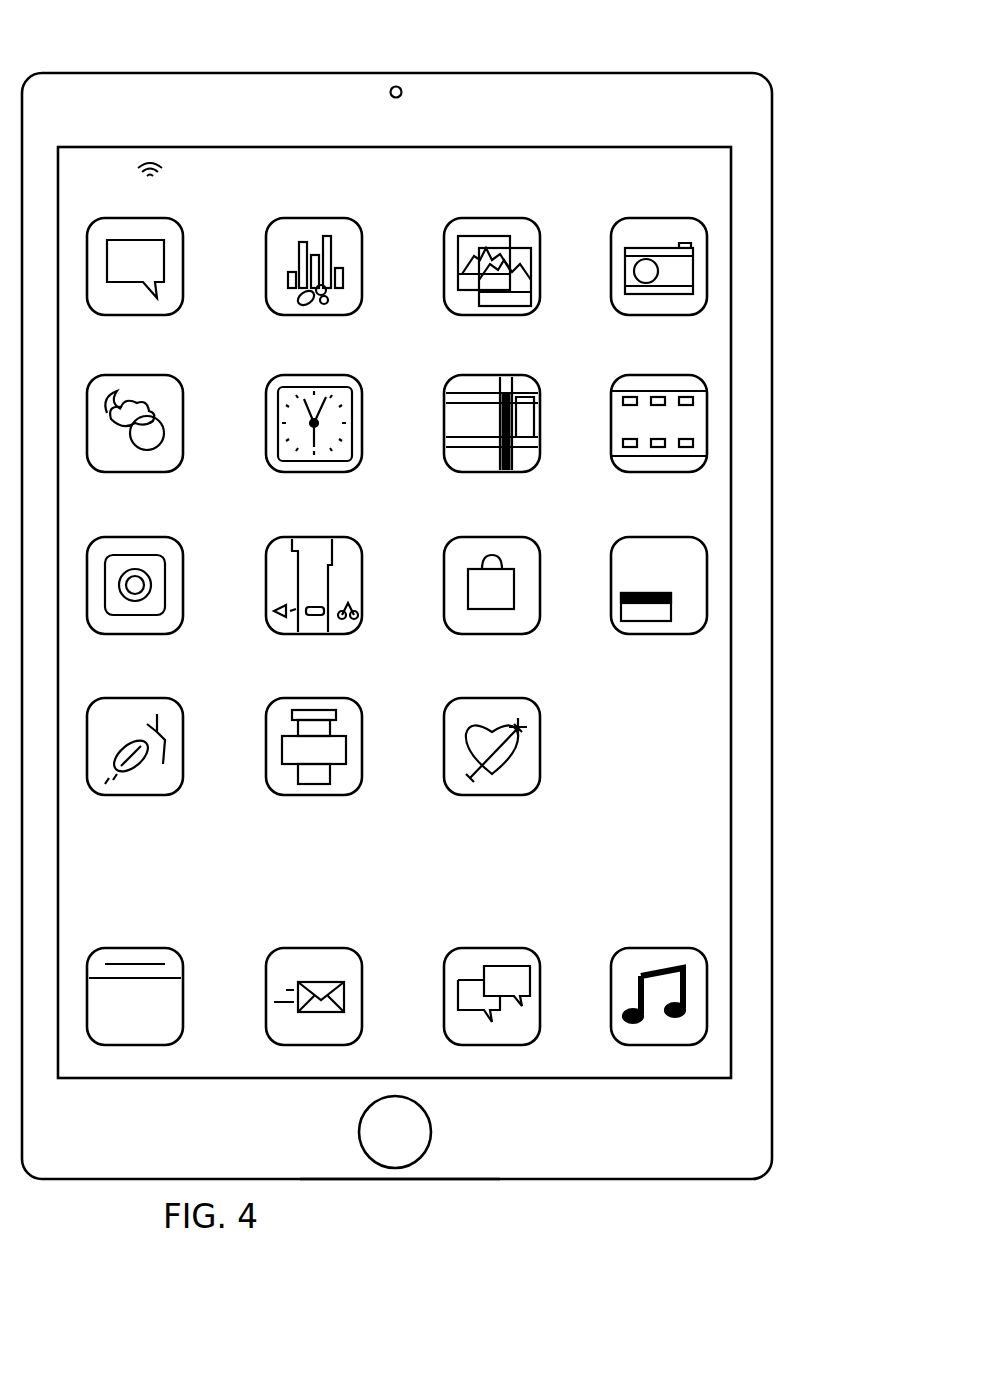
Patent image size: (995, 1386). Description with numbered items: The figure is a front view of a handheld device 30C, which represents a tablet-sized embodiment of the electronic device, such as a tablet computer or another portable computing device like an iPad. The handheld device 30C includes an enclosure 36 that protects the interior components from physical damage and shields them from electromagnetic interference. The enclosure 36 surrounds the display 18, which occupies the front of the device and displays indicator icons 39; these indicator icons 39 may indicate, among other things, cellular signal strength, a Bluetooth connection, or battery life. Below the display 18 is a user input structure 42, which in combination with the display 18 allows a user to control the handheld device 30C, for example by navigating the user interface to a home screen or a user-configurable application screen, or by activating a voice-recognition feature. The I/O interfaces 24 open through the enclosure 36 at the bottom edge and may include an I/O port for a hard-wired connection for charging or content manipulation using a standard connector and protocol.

The handheld device 30C is at (160, 48).
The enclosure 36 is at (708, 73).
The indicator icons 39 is at (375, 188).
The display 18 is at (731, 817).
The user input structures 42 is at (431, 1133).
The I/O interfaces 24 is at (398, 1180).